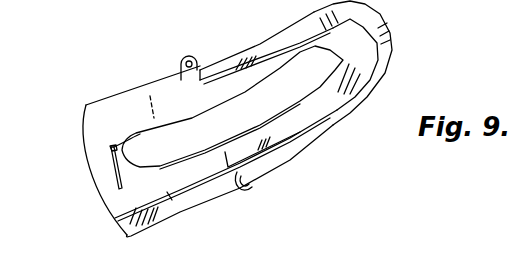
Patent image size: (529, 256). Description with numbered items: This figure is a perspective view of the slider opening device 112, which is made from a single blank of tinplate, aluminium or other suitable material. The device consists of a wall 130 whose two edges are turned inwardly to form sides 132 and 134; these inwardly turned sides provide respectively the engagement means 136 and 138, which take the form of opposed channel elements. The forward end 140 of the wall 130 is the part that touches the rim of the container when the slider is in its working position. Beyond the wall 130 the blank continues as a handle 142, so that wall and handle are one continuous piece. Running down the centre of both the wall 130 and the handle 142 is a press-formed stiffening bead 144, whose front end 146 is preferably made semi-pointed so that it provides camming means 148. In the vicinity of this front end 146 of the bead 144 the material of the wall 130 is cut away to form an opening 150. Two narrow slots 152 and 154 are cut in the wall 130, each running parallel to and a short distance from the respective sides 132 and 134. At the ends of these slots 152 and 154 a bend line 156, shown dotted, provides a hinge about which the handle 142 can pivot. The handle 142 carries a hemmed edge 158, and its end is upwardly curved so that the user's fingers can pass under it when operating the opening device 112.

The slider opening device 112 is at (268, 183).
The wall 130 is at (128, 116).
The inwardly turned side 132 is at (153, 72).
The inwardly turned side 134 is at (207, 203).
The engagement means 136 is at (200, 62).
The engagement means 138 is at (268, 170).
The forward end 140 is at (93, 176).
The handle 142 is at (302, 33).
The stiffening bead 144 is at (298, 93).
The front end 146 is at (84, 128).
The camming means 148 is at (120, 190).
The opening 150 is at (110, 147).
The narrow slot 152 is at (182, 80).
The narrow slot 154 is at (245, 193).
The bend line 156 is at (167, 192).
The hemmed edge 158 is at (390, 35).